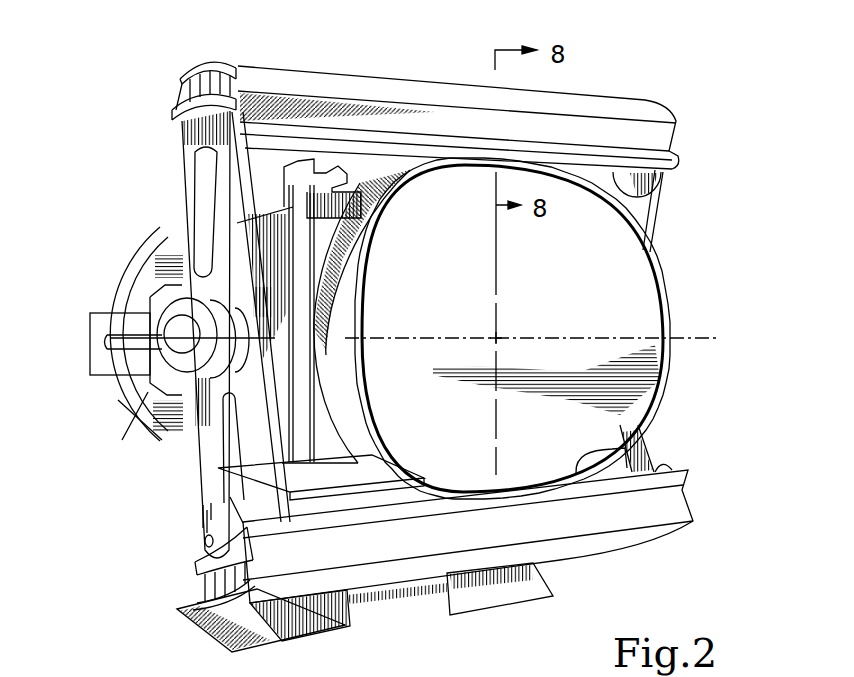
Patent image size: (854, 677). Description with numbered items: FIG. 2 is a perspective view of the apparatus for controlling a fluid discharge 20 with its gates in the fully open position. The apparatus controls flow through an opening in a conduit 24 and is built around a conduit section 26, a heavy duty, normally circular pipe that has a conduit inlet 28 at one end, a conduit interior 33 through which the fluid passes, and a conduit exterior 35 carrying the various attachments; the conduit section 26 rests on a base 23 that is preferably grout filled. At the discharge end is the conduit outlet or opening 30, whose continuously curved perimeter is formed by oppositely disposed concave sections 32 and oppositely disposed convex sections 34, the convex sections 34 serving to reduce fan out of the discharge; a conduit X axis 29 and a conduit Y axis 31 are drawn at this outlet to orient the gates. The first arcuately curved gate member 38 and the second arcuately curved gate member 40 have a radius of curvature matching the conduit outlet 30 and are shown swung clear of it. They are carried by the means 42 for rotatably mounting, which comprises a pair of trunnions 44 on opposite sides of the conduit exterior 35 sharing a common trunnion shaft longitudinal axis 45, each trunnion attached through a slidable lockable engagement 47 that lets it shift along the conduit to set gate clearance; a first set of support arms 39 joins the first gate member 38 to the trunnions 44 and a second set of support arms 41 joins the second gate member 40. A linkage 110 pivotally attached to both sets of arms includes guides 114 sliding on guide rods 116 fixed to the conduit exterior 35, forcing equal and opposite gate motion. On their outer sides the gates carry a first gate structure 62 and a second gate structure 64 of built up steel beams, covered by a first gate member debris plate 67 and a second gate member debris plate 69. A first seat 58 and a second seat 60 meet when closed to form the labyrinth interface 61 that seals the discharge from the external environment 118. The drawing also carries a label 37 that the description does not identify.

The apparatus for controlling a fluid discharge 20 is at (678, 70).
The base 23 is at (548, 583).
The conduit 24 is at (543, 318).
The conduit section 26 is at (140, 435).
The conduit inlet 28 is at (157, 232).
The conduit X axis 29 is at (700, 337).
The conduit outlet or opening 30 is at (650, 258).
The conduit Y axis 31 is at (493, 397).
The concave section 32 is at (468, 163).
The conduit interior 33 is at (428, 277).
The convex section 34 is at (367, 288).
The conduit exterior 35 is at (193, 443).
The lug 37 is at (585, 453).
The first arcuately curved gate member 38 is at (177, 120).
The first set of support arms 39 is at (183, 160).
The second arcuately curved gate member 40 is at (193, 570).
The second set of support arms 41 is at (263, 500).
The means for rotatably mounting 42 is at (140, 405).
The trunnion 44 is at (150, 297).
The trunnion shaft longitudinal axis 45 is at (268, 325).
The slidable lockable engagement 47 is at (340, 228).
The first seat 58 is at (679, 166).
The second seat 60 is at (690, 474).
The labyrinth interface 61 is at (653, 193).
The first gate structure 62 is at (182, 90).
The second gate structure 64 is at (193, 587).
The first gate member debris plate 67 is at (187, 63).
The second gate member debris plate 69 is at (197, 630).
The linkage 110 is at (128, 350).
The guide 114 is at (148, 315).
The guide rod 116 is at (143, 348).
The external environment 118 is at (702, 563).